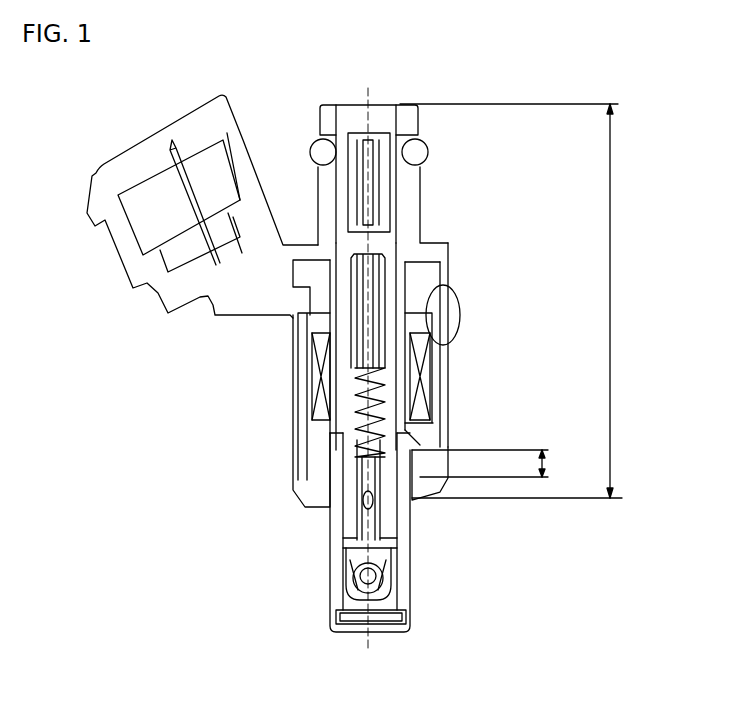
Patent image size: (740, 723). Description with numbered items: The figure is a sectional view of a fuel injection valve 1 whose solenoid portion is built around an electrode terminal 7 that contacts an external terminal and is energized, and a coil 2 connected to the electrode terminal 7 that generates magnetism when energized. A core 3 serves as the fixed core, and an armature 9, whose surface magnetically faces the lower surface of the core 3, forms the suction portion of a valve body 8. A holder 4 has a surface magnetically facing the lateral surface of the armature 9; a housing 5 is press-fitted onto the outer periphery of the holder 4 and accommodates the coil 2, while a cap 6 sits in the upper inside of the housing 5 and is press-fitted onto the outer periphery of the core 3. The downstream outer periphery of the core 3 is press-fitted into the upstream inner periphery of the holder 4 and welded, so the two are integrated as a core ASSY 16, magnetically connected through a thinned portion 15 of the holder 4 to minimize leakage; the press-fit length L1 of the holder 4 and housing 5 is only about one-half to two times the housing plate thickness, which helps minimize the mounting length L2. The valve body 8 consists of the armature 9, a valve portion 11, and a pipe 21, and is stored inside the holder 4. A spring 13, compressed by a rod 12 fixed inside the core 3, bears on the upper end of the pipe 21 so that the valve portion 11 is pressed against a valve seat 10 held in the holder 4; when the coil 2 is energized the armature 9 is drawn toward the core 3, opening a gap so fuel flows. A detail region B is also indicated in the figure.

The fuel injection valve 1 is at (425, 88).
The coil 2 is at (427, 359).
The core 3 is at (347, 347).
The holder 4 is at (343, 560).
The housing 5 is at (312, 428).
The cap 6 is at (423, 262).
The electrode terminal 7 is at (200, 253).
The valve body 8 is at (480, 597).
The armature 9 is at (413, 547).
The valve seat 10 is at (343, 600).
The valve portion 11 is at (407, 608).
The rod 12 is at (433, 249).
The spring 13 is at (422, 420).
The thinned portion 15 is at (413, 430).
The core ASSY 16 is at (155, 426).
The pipe 21 is at (343, 535).
The detail region B is at (458, 305).
The press-fit length L1 is at (494, 463).
The mounting length L2 is at (612, 186).